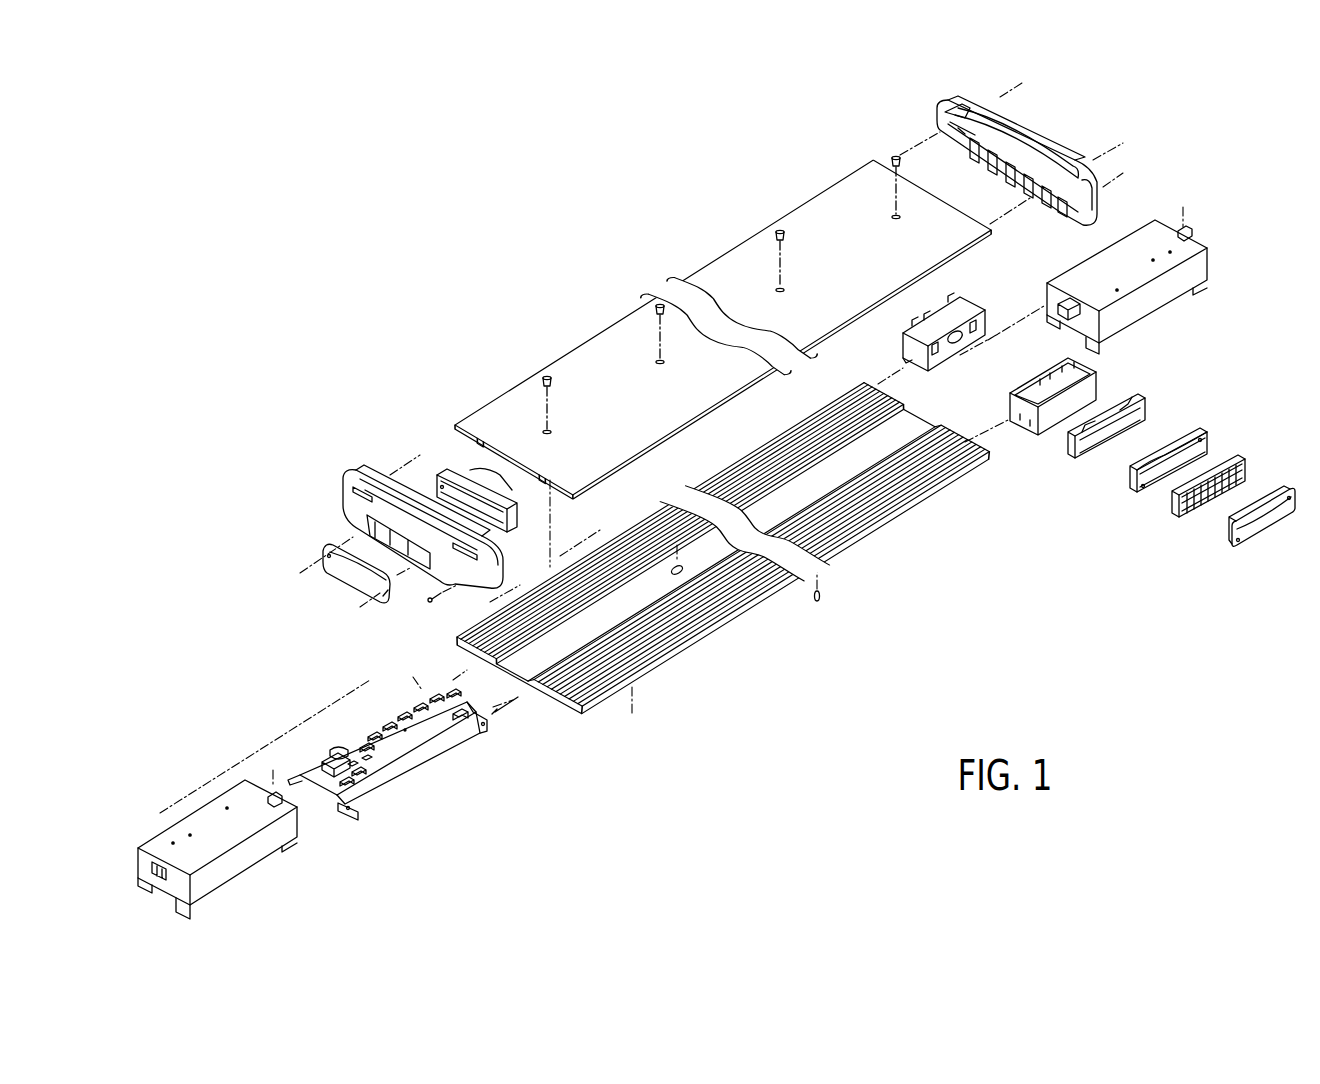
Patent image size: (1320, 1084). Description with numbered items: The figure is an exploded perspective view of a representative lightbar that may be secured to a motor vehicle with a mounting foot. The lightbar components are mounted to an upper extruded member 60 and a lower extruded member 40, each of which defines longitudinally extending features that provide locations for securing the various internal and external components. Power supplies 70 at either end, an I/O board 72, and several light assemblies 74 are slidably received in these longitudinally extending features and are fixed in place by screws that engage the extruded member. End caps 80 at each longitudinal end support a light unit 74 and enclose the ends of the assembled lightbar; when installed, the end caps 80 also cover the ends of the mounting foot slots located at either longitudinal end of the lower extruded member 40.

The lower extruded member 40 is at (703, 633).
The upper extruded member 60 is at (583, 360).
The power supply 70 is at (265, 853).
The I/O board 72 is at (400, 770).
The light assembly 74 is at (440, 470).
The end cap 80 is at (938, 110).